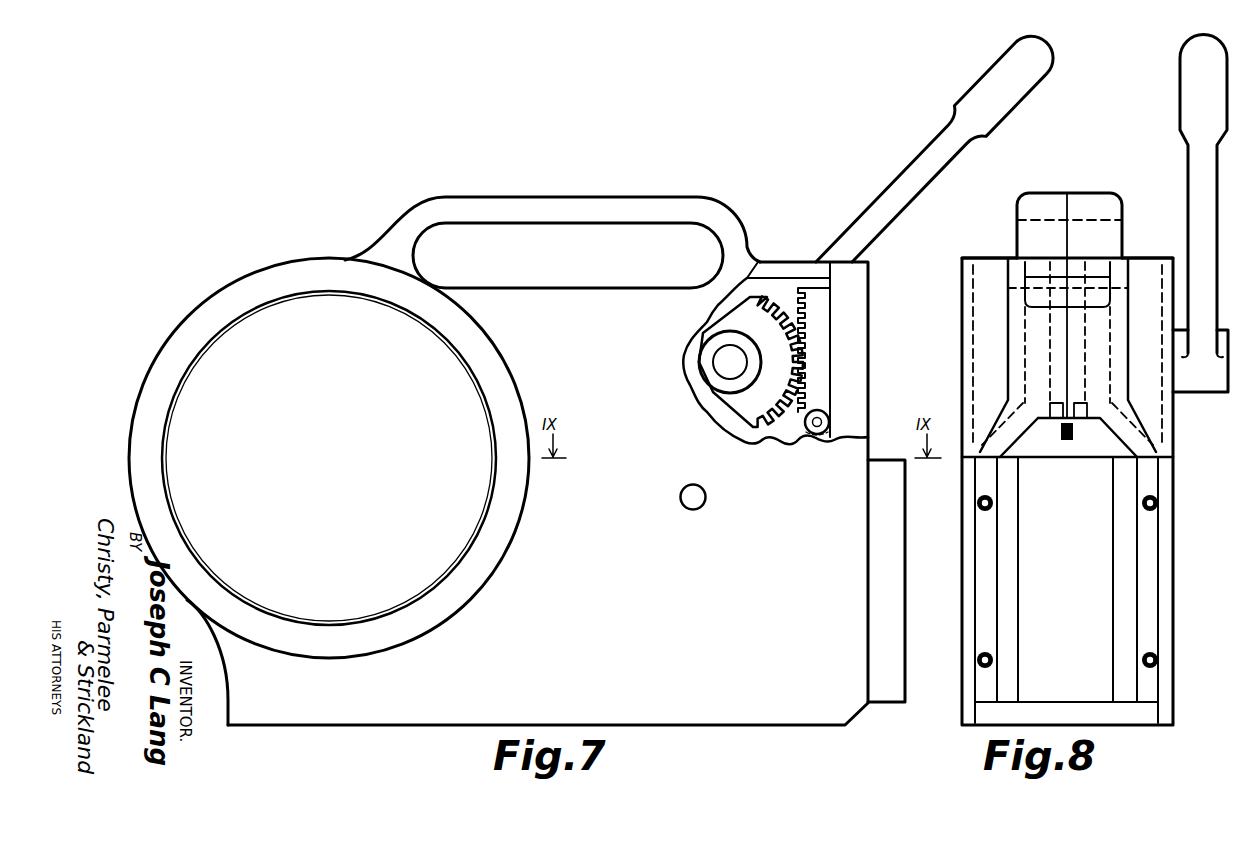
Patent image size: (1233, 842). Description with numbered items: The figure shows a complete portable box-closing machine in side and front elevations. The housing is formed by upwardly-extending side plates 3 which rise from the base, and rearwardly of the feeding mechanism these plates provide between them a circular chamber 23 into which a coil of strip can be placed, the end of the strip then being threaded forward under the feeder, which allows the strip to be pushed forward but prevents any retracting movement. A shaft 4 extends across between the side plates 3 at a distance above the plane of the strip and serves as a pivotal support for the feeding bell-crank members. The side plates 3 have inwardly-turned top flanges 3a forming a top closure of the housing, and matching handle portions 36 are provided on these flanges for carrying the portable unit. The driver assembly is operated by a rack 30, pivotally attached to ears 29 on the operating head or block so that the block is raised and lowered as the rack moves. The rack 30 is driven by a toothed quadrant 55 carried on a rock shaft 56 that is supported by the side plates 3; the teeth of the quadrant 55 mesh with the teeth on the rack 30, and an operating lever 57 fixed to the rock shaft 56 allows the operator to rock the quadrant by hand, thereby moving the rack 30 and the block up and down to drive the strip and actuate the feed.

In FIG. 7, the side plates 3 is at (612, 506).
In FIG. 8, the side plates 3 is at (962, 384).
In FIG. 8, the inwardly-turned top flanges 3a is at (983, 258).
In FIG. 7, the shaft 4 is at (706, 495).
In FIG. 7, the circular chamber 23 is at (244, 332).
In FIG. 7, the ears 29 is at (825, 432).
In FIG. 7, the rack 30 is at (823, 366).
In FIG. 7, the carrying handle 36 is at (549, 207).
In FIG. 8, the carrying handle 36 is at (1097, 203).
In FIG. 7, the toothed quadrant 55 is at (735, 327).
In FIG. 7, the rock shaft 56 is at (719, 366).
In FIG. 7, the operating lever 57 is at (908, 170).
In FIG. 8, the operating lever 57 is at (1188, 112).